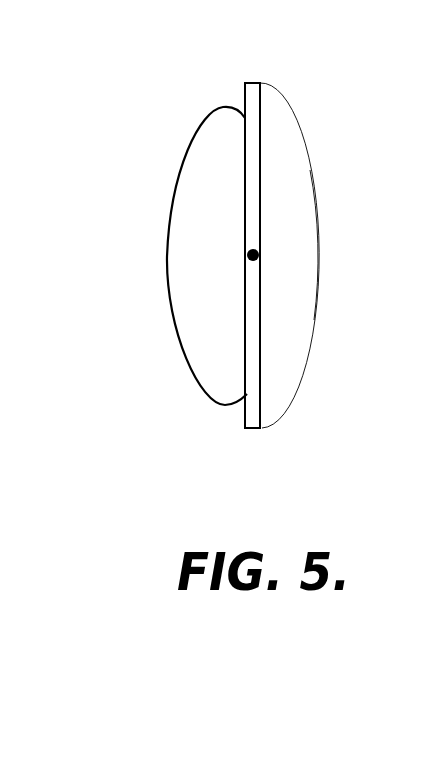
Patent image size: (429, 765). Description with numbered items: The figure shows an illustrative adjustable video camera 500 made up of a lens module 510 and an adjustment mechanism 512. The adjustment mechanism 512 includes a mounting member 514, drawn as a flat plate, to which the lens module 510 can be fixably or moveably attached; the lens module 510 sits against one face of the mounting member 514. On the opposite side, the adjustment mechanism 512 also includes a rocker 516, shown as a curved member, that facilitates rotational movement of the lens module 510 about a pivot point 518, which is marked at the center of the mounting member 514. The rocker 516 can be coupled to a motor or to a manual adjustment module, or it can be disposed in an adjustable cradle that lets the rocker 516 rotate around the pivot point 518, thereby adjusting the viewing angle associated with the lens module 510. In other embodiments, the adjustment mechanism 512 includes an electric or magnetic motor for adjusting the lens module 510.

The adjustable video camera 500 is at (74, 84).
The lens module 510 is at (167, 257).
The adjustment mechanism 512 is at (352, 155).
The mounting member 514 is at (250, 83).
The rocker 516 is at (317, 255).
The pivot point 518 is at (259, 253).